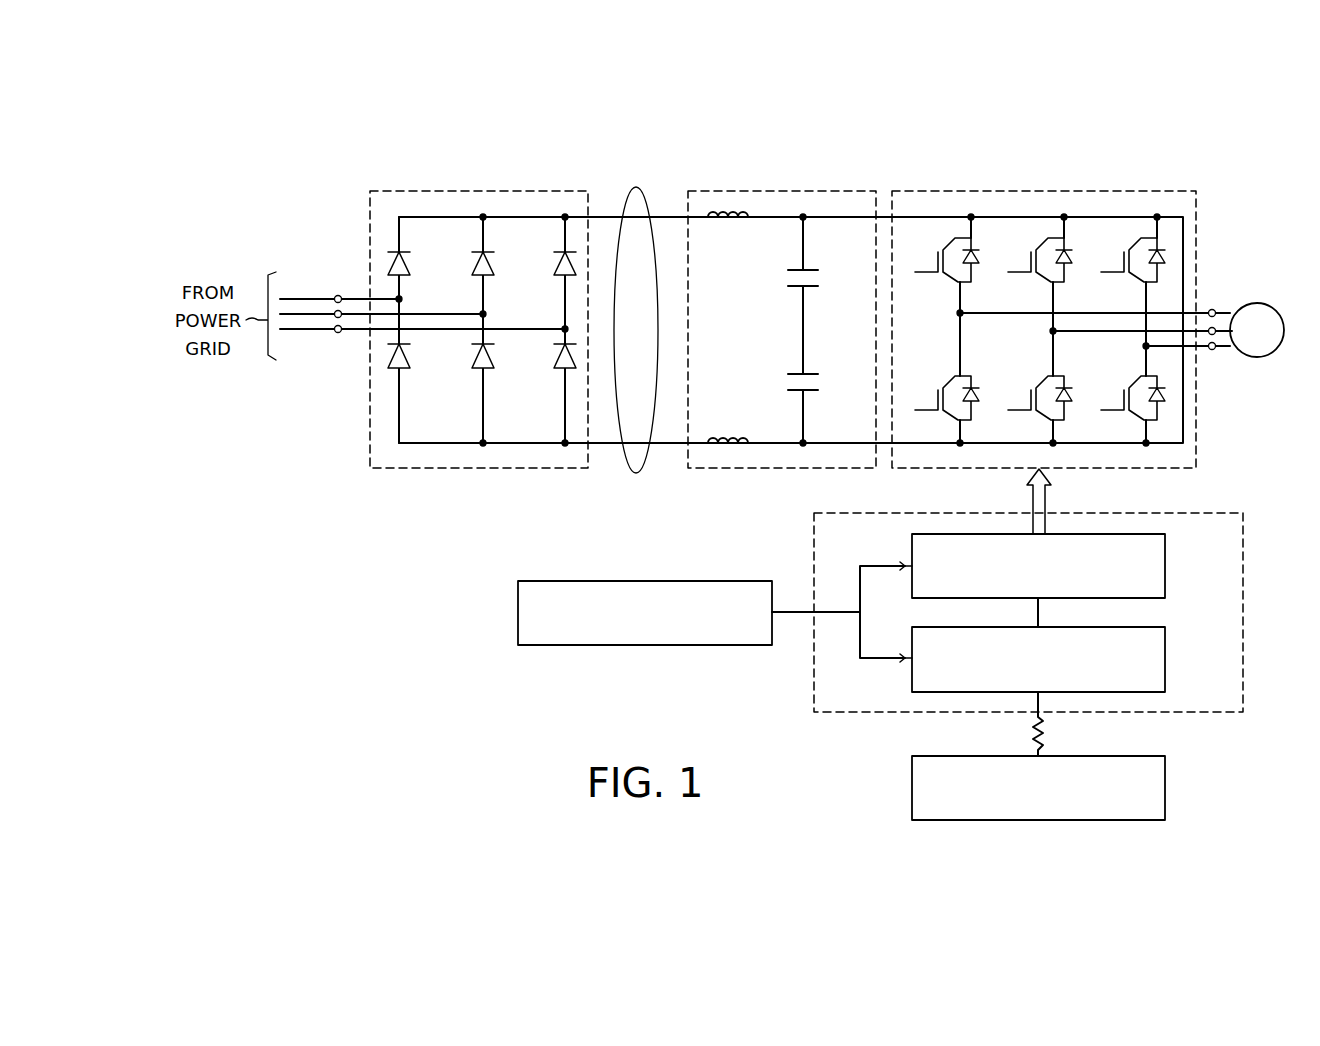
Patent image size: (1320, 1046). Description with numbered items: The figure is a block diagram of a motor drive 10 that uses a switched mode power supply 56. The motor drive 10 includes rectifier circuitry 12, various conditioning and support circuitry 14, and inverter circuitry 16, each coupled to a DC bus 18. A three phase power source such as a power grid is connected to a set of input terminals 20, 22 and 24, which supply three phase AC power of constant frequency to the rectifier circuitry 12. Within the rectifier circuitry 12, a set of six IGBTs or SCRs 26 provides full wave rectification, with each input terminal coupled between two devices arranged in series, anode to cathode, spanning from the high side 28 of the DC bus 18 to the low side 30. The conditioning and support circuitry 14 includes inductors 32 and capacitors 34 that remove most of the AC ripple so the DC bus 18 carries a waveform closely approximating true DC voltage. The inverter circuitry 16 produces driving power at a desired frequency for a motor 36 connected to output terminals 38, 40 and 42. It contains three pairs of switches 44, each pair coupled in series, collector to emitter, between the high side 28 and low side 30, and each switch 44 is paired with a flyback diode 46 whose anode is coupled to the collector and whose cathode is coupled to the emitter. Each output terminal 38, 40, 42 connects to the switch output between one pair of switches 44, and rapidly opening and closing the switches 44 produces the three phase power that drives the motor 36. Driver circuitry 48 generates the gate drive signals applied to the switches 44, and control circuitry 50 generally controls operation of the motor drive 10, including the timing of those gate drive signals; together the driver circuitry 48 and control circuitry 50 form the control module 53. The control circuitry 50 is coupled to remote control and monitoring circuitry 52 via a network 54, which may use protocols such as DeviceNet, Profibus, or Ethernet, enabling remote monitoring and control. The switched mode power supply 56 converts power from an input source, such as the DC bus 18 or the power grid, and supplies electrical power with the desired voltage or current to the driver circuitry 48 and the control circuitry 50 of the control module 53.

The motor drive 10 is at (906, 110).
The rectifier circuitry 12 is at (482, 191).
The conditioning and support circuitry 14 is at (786, 191).
The inverter circuitry 16 is at (1042, 191).
The DC bus 18 is at (636, 188).
The input terminal 20 is at (338, 295).
The input terminal 22 is at (335, 311).
The input terminal 24 is at (338, 333).
The IGBTs or SCRs 26 is at (478, 370).
The high side of the DC bus 28 is at (662, 215).
The low side of the DC bus 30 is at (662, 446).
The inductors 32 is at (726, 221).
The capacitors 34 is at (808, 268).
The motor 36 is at (1257, 357).
The output terminal 38 is at (1211, 310).
The output terminal 40 is at (1213, 328).
The output terminal 42 is at (1212, 350).
The switches 44 is at (938, 262).
The flyback diode 46 is at (975, 250).
The driver circuitry 48 is at (1165, 566).
The control circuitry 50 is at (1165, 658).
The remote control and monitoring circuitry 52 is at (1165, 785).
The control module 53 is at (1218, 512).
The network 54 is at (1043, 748).
The switched mode power supply 56 is at (518, 610).